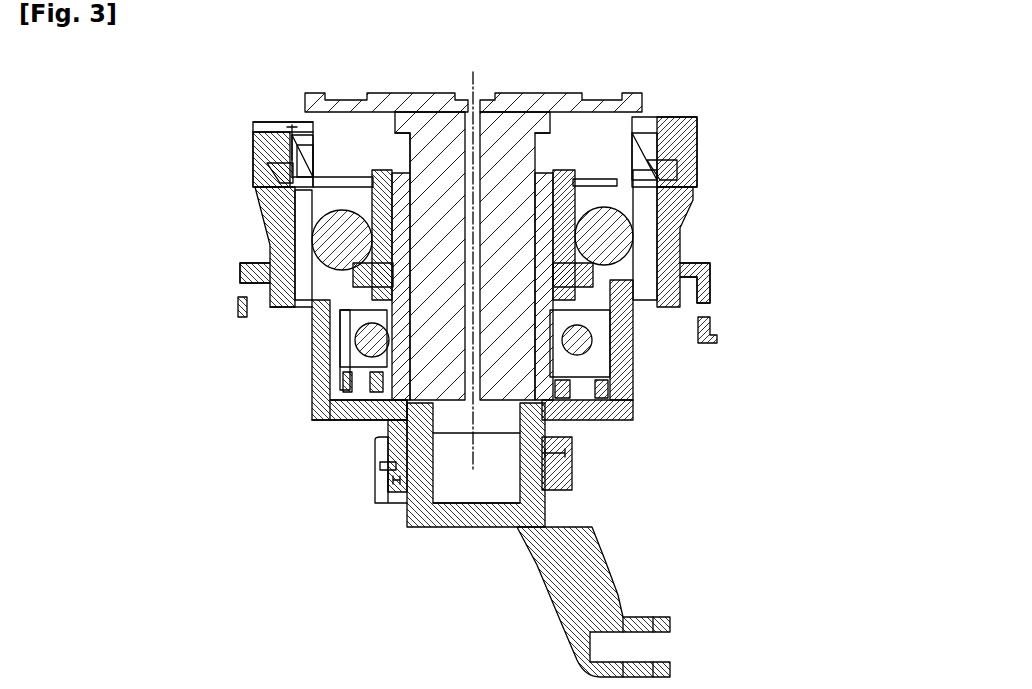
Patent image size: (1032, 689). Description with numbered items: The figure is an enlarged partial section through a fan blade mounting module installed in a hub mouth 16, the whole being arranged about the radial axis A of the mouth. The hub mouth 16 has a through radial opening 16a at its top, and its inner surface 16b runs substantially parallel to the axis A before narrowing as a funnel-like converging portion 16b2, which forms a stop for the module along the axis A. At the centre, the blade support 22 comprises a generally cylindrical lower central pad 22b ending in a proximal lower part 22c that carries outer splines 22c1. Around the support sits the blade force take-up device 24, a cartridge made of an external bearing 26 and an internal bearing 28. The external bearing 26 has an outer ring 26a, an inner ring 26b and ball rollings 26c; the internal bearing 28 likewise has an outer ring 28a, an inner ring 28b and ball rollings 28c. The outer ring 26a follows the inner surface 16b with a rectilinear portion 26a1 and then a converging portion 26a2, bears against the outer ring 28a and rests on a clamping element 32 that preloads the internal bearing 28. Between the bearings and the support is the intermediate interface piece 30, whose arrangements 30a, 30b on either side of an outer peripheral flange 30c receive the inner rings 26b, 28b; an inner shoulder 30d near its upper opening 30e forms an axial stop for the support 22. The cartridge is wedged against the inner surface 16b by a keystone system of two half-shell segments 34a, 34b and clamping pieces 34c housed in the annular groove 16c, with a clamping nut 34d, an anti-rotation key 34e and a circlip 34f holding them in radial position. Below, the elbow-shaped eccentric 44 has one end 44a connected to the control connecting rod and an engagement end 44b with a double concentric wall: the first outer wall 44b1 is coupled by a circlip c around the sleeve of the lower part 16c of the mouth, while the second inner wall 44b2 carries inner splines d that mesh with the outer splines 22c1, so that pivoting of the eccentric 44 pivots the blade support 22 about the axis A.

The hub mouth 16 is at (772, 152).
The radial opening 16a is at (430, 120).
The inner surface 16b is at (401, 238).
The converging portion 16b2 is at (398, 363).
The annular groove / lower part of the mouth 16c is at (536, 349).
The blade support 22 is at (533, 220).
The lower central pad 22b is at (397, 107).
The lower part of the blade support 22c is at (476, 485).
The outer splines 22c1 is at (486, 550).
The blade force take-up device 24 is at (596, 430).
The external bearing 26 is at (693, 238).
The outer ring of the external bearing 26a is at (170, 347).
The rectilinear portion 26a1 is at (191, 304).
The converging portion 26a2 is at (250, 345).
The inner ring of the external bearing 26b is at (783, 283).
The ball rollings of the external bearing 26c is at (200, 250).
The internal bearing 28 is at (693, 331).
The outer ring of the internal bearing 28a is at (250, 400).
The inner ring of the internal bearing 28b is at (750, 360).
The ball rollings of the internal bearing 28c is at (275, 496).
The intermediate interface piece 30 is at (707, 286).
The arrangement for the inner ring of the external bearing 30a is at (361, 220).
The arrangement for the inner ring of the internal bearing 30b is at (325, 326).
The outer peripheral flange 30c is at (664, 330).
The inner shoulder 30d is at (627, 235).
The upper opening of the interface piece 30e is at (569, 151).
The clamping element 32 is at (253, 539).
The segment (half-shell) 34a is at (763, 192).
The segment (half-shell) 34b is at (229, 165).
The clamping pieces 34c is at (196, 191).
The clamping nut 34d is at (205, 154).
The anti-rotation key 34e is at (193, 119).
The circlip 34f is at (243, 115).
The eccentric 44 is at (717, 602).
The end of the eccentric 44a is at (705, 647).
The engagement end 44b is at (380, 526).
The first outer wall 44b1 is at (362, 555).
The second inner wall 44b2 is at (460, 516).
The radial axis A is at (494, 264).
The circlip c is at (400, 521).
The inner splines d is at (577, 463).